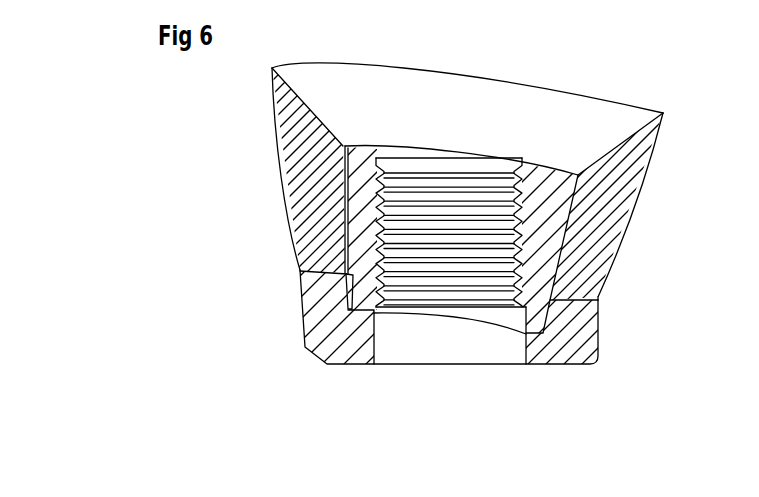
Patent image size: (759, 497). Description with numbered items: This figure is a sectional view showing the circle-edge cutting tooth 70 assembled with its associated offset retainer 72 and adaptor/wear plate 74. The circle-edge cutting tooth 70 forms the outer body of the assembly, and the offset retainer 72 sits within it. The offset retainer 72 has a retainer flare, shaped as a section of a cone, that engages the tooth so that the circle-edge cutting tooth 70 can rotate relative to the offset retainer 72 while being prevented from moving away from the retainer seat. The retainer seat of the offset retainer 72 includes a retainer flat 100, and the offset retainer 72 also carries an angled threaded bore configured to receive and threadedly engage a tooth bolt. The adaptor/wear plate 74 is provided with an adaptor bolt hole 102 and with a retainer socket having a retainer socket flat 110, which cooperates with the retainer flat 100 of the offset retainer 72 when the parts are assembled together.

The circle-edge cutting tooth 70 is at (273, 152).
The offset retainer 72 is at (547, 238).
The adaptor/wear plate 74 is at (598, 332).
The retainer flat 100 is at (378, 286).
The adaptor bolt hole 102 is at (528, 346).
The retainer socket flat 110 is at (376, 286).